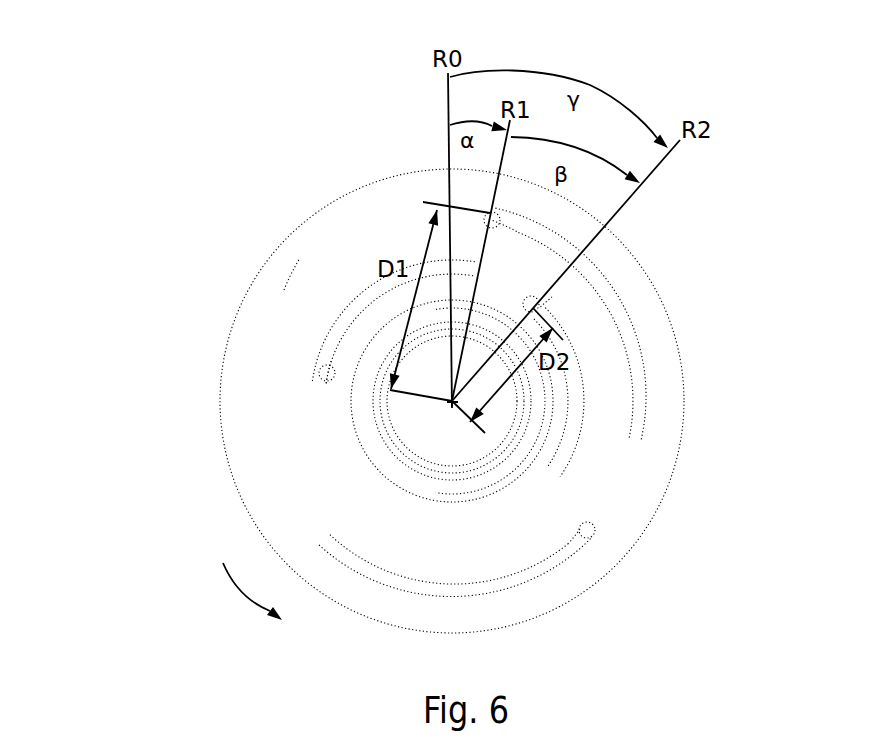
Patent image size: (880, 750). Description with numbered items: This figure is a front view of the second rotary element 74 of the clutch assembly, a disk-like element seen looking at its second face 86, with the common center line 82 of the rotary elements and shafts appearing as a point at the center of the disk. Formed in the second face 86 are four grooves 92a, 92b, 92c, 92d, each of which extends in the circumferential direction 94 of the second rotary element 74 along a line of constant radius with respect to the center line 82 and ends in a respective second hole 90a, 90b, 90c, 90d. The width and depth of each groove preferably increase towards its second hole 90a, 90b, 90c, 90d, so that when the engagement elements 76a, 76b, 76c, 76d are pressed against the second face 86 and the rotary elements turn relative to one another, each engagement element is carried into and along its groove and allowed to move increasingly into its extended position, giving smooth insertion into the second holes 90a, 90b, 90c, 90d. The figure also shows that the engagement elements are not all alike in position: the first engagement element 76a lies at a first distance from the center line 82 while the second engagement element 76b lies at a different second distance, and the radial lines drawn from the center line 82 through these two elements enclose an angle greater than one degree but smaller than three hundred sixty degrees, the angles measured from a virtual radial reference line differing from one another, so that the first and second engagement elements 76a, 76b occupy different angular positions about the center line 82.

The second rotary element 74 is at (285, 237).
The second face 86 is at (295, 272).
The center line 82 is at (452, 403).
The first engagement element 76a is at (488, 212).
The second engagement element 76b is at (540, 307).
The engagement element 76c is at (586, 530).
The engagement element 76d is at (320, 373).
The second hole 90a is at (487, 213).
The second hole 90b is at (540, 305).
The second hole 90c is at (593, 542).
The second hole 90d is at (320, 376).
The groove 92a is at (553, 242).
The groove 92b is at (573, 382).
The groove 92c is at (543, 570).
The groove 92d is at (347, 332).
The circumferential direction 94 is at (243, 591).